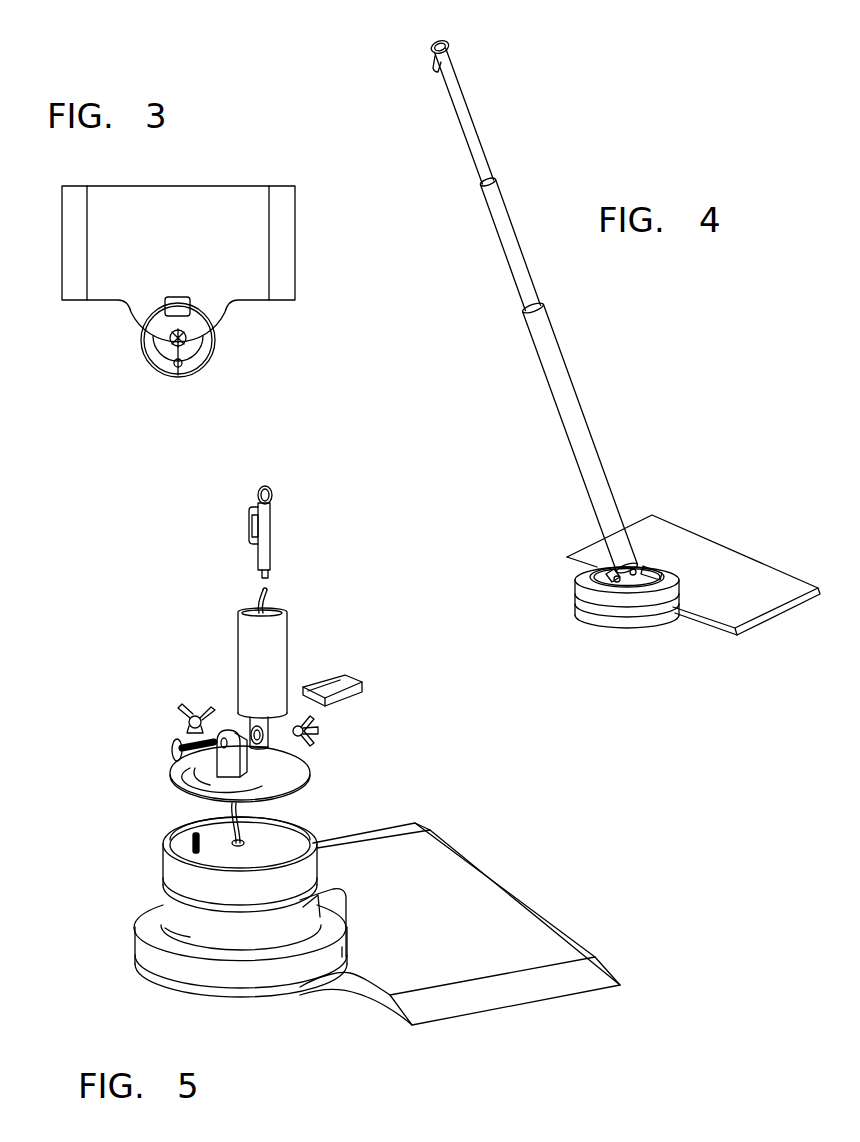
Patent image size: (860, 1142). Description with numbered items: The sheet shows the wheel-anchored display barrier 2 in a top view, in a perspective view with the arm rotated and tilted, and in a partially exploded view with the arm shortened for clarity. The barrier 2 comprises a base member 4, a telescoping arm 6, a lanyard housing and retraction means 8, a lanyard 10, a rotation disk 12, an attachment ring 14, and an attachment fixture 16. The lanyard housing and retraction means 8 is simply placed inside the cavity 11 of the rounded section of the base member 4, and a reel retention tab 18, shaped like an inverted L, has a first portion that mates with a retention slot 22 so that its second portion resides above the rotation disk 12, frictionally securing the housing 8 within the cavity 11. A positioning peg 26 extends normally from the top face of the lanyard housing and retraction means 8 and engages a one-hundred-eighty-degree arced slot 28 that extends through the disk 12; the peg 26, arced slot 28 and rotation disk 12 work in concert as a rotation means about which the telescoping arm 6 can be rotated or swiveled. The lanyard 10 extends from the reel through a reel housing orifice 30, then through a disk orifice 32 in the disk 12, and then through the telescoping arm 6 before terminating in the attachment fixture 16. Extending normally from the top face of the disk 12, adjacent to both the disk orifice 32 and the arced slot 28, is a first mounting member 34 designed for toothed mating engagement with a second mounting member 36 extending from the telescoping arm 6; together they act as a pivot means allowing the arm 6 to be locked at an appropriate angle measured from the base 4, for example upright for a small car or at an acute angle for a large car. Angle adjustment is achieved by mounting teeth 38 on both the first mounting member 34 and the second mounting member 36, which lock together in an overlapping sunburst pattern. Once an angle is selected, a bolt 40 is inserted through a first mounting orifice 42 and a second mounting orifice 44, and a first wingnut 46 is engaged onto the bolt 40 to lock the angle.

In FIG. 3, the wheel-anchored display barrier 2 is at (68, 374).
In FIG. 4, the wheel-anchored display barrier 2 is at (735, 471).
In FIG. 3, the base member 4 is at (225, 186).
In FIG. 4, the base member 4 is at (753, 553).
In FIG. 5, the base member 4 is at (518, 890).
In FIG. 4, the telescoping arm 6 is at (547, 375).
In FIG. 5, the telescoping arm 6 is at (238, 660).
In FIG. 5, the lanyard housing and retraction means 8 is at (172, 875).
In FIG. 5, the lanyard 10 is at (260, 595).
In FIG. 5, the cavity 11 is at (190, 937).
In FIG. 3, the rotation disk 12 is at (203, 328).
In FIG. 4, the rotation disk 12 is at (650, 588).
In FIG. 5, the rotation disk 12 is at (295, 760).
In FIG. 4, the attachment ring 14 is at (447, 47).
In FIG. 5, the attachment ring 14 is at (270, 490).
In FIG. 4, the attachment fixture 16 is at (437, 70).
In FIG. 5, the attachment fixture 16 is at (252, 522).
In FIG. 5, the reel retention tab 18 is at (366, 666).
In FIG. 5, the retention slot 22 is at (350, 973).
In FIG. 5, the positioning peg 26 is at (193, 835).
In FIG. 5, the arced slot 28 is at (250, 792).
In FIG. 5, the reel housing orifice 30 is at (315, 845).
In FIG. 4, the disk orifice 32 is at (630, 580).
In FIG. 5, the first mounting member 34 is at (183, 797).
In FIG. 5, the second mounting member 36 is at (285, 718).
In FIG. 5, the mounting teeth 38 is at (240, 725).
In FIG. 5, the bolt 40 is at (175, 745).
In FIG. 5, the first mounting orifice 42 is at (200, 775).
In FIG. 5, the second mounting orifice 44 is at (305, 773).
In FIG. 5, the first wingnut 46 is at (320, 733).